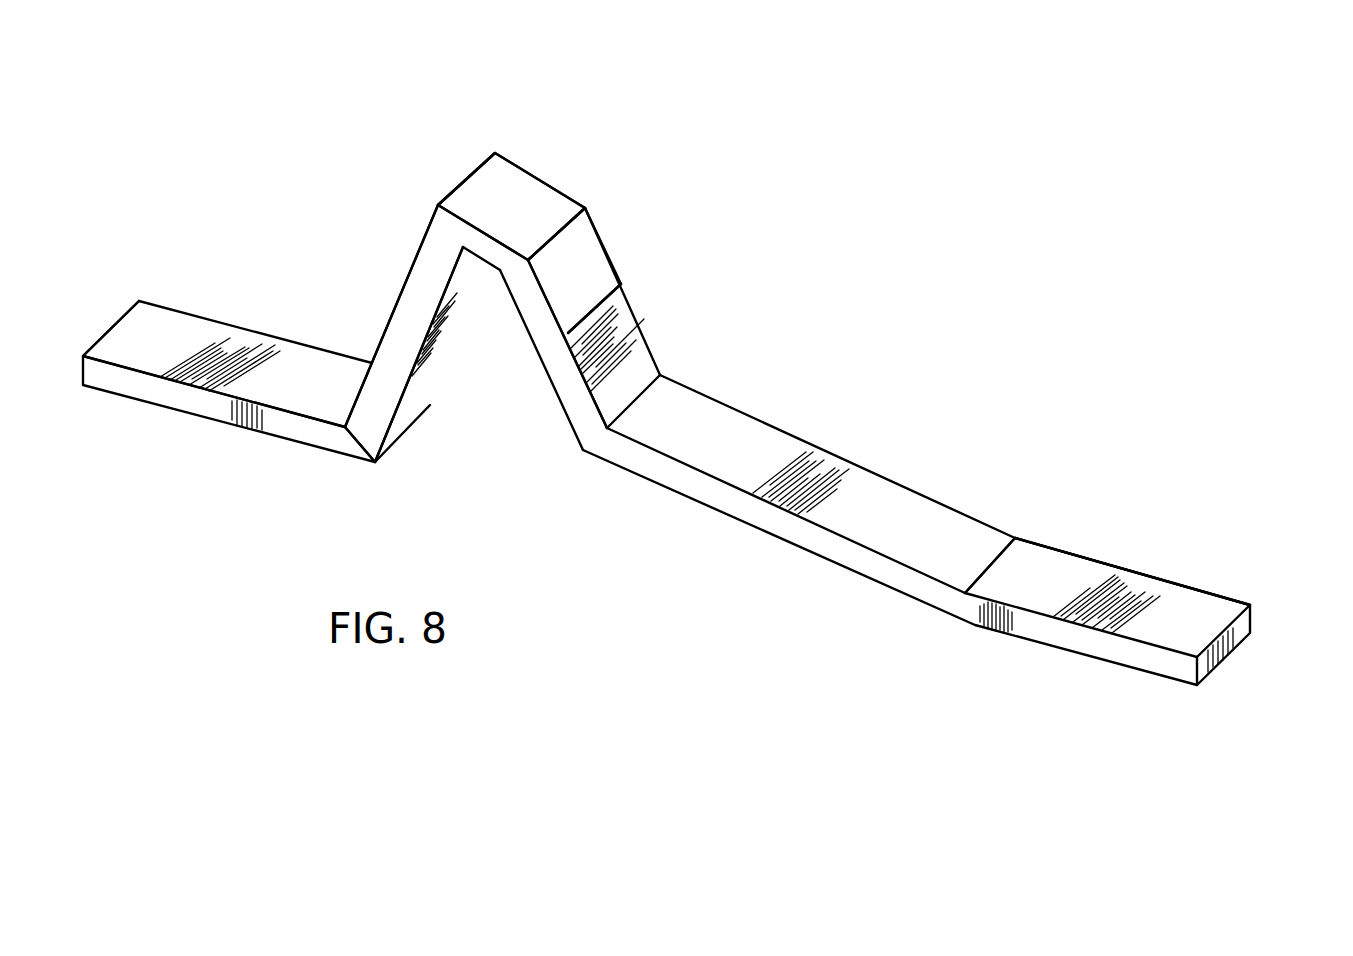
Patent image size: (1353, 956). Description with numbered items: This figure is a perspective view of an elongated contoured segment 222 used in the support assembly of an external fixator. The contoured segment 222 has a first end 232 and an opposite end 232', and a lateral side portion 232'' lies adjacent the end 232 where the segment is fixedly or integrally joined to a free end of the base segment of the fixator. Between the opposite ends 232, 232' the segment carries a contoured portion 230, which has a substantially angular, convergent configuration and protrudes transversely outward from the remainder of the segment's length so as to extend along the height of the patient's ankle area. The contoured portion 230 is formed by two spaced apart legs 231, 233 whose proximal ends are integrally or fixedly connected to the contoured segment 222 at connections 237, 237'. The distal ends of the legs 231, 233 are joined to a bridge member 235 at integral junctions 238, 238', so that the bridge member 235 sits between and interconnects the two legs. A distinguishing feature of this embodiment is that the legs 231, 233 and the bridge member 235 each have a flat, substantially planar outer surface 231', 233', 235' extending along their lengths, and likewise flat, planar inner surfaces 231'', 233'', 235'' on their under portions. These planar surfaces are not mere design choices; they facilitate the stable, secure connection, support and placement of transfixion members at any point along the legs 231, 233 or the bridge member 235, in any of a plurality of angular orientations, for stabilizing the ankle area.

The contoured segment 222 is at (887, 226).
The contoured portion 230 is at (618, 141).
The leg 231 is at (661, 318).
The flat outer surface of leg 231' is at (668, 270).
The flat inner surface of leg 231'' is at (544, 401).
The end of contoured segment 232 is at (206, 327).
The opposite end of contoured segment 232' is at (1159, 646).
The lateral side portion 232'' is at (214, 304).
The leg 233 is at (380, 333).
The flat outer surface of leg 233' is at (372, 301).
The flat inner surface of leg 233'' is at (432, 372).
The bridge member 235 is at (511, 136).
The flat outer surface of bridge member 235' is at (522, 152).
The flat inner surface of bridge member 235'' is at (495, 309).
The leg connection 237 is at (714, 375).
The leg connection 237' is at (335, 377).
The integral junction 238 is at (627, 211).
The integral junction 238' is at (436, 146).